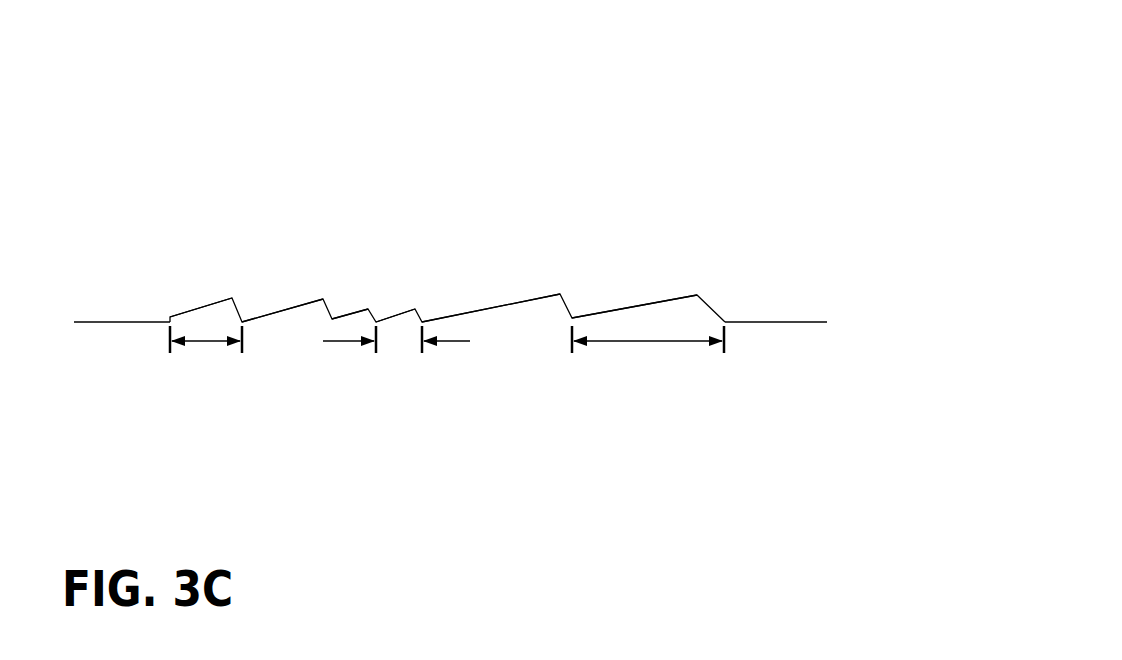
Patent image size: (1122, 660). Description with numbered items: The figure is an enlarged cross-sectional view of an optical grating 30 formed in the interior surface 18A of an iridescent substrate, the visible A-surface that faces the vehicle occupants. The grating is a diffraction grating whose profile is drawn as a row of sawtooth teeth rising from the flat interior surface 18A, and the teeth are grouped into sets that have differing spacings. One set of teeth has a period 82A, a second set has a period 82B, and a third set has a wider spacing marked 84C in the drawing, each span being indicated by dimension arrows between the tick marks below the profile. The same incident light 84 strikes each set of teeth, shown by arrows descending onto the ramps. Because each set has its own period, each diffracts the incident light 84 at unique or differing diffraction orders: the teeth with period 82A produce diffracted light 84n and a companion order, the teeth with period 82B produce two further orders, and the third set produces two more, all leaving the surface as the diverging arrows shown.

The optical grating 30 is at (710, 150).
The interior surface 18A is at (110, 322).
The incident light 84 is at (182, 308).
The diffracted light 84n is at (190, 302).
The period 82A is at (203, 341).
The period 82B is at (347, 341).
The ridge width C 84C is at (635, 341).